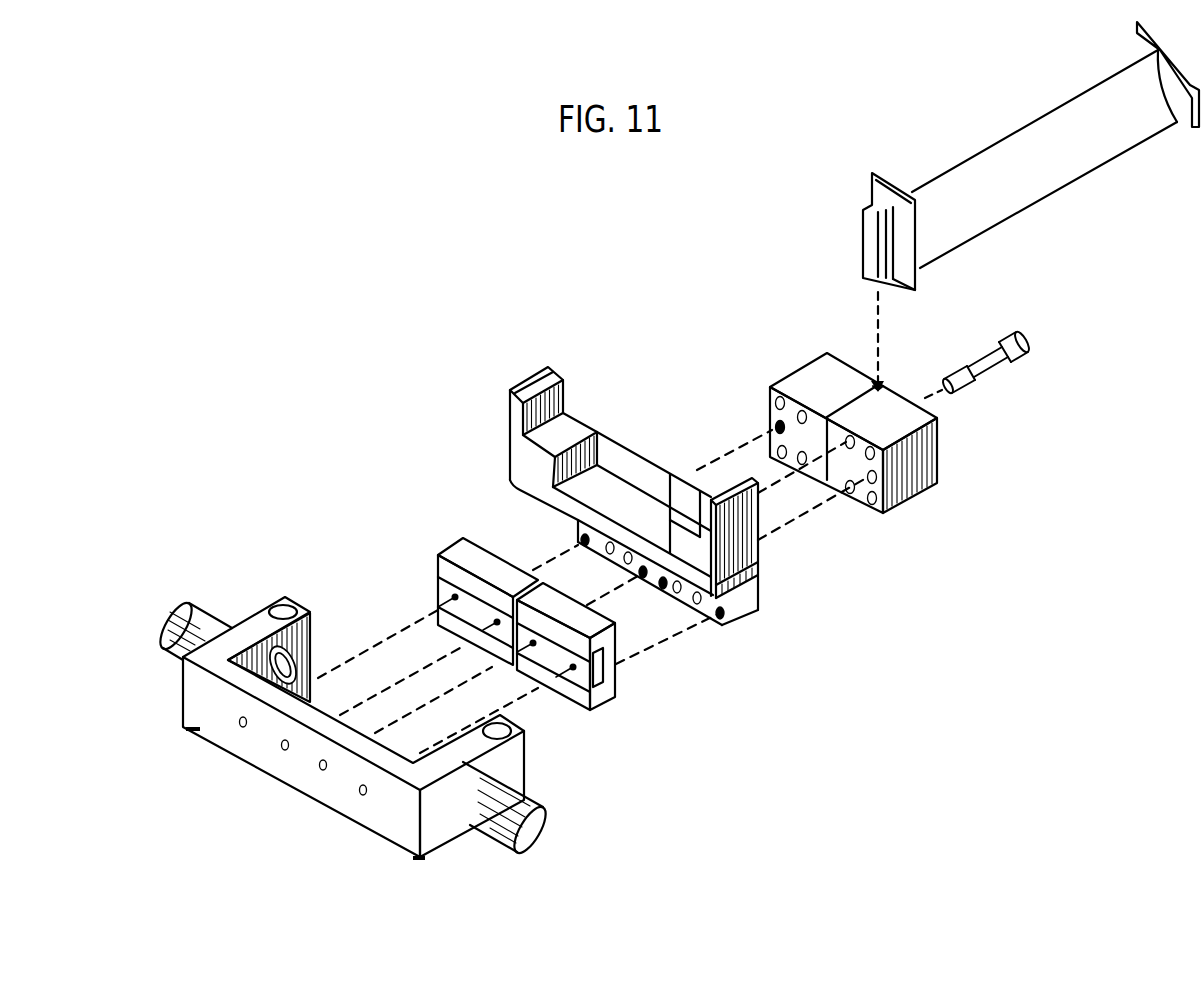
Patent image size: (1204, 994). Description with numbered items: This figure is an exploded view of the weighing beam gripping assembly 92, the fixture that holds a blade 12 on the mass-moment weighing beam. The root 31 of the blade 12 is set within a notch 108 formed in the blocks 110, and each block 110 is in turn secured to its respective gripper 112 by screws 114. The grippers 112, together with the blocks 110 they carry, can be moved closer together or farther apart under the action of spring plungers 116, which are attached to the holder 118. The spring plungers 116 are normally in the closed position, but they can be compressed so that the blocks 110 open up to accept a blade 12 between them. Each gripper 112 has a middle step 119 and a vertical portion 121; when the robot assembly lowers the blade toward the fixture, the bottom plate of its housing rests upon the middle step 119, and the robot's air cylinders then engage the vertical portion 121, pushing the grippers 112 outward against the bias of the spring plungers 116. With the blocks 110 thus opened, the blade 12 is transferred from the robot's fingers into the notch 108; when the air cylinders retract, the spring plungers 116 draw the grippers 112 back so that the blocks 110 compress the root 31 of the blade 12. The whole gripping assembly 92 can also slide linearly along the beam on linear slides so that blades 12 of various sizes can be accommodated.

The blade 12 is at (1000, 153).
The root 31 is at (863, 210).
The weighing beam gripping assembly 92 is at (635, 472).
The notch 108 is at (883, 388).
The blocks 110 is at (913, 503).
The gripper 112 is at (566, 392).
The screws 114 is at (997, 373).
The spring plungers 116 is at (552, 828).
The holder 118 is at (365, 820).
The middle step 119 is at (577, 430).
The vertical portion 121 is at (636, 472).